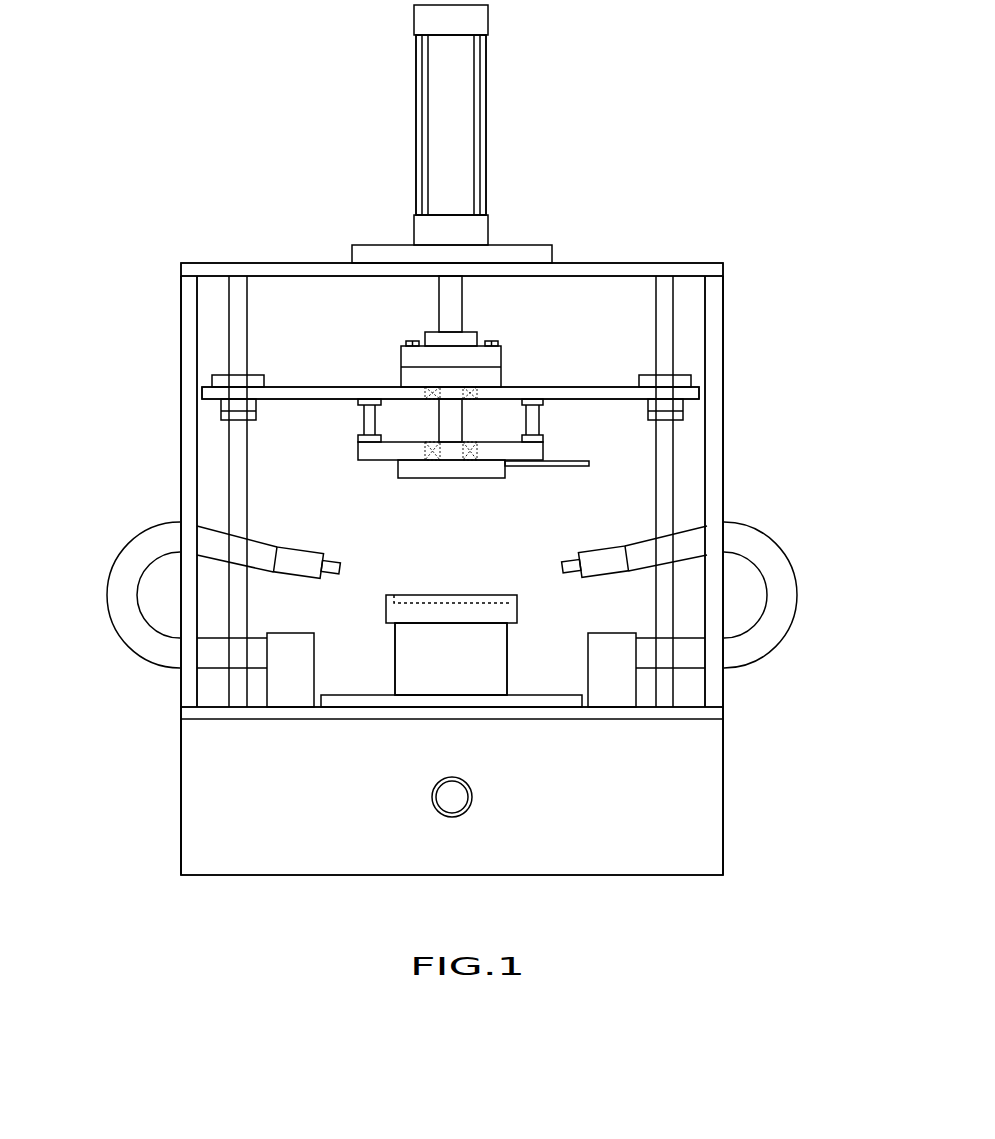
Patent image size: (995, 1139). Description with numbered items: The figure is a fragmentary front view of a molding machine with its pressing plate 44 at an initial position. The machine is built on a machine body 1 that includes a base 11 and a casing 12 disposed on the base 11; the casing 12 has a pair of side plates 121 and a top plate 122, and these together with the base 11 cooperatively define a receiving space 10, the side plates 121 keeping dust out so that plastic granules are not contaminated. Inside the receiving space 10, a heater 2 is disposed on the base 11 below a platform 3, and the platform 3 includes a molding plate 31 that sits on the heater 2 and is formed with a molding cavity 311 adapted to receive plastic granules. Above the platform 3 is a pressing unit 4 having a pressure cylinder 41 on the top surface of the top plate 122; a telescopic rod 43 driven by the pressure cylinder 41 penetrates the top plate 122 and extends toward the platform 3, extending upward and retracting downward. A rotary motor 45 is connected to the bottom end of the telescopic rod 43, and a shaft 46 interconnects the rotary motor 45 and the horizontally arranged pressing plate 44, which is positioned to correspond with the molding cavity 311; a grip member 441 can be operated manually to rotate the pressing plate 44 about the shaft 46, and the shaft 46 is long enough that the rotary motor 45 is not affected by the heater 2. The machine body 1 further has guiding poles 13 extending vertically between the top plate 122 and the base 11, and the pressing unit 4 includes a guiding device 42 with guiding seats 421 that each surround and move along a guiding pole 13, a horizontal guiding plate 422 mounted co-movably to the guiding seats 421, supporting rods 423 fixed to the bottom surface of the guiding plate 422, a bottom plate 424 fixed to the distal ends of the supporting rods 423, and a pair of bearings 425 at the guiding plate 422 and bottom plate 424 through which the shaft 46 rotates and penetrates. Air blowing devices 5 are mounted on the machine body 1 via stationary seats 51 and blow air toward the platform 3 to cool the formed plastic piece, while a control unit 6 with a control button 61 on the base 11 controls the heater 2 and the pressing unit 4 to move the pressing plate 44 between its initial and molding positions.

The machine body 1 is at (168, 841).
The receiving space 10 is at (215, 468).
The base 11 is at (220, 785).
The casing 12 is at (181, 512).
The side plates 121 is at (183, 296).
The top plate 122 is at (276, 268).
The guiding poles 13 is at (240, 295).
The heater 2 is at (450, 643).
The platform 3 is at (530, 607).
The molding plate 31 is at (517, 618).
The molding cavity 311 is at (394, 603).
The pressing unit 4 is at (502, 137).
The pressure cylinder 41 is at (463, 82).
The guiding device 42 is at (575, 396).
The guiding seats 421 is at (212, 382).
The guiding plate 422 is at (652, 393).
The supporting rods 423 is at (365, 423).
The bottom plate 424 is at (363, 452).
The bearings 425 is at (425, 392).
The telescopic rod 43 is at (457, 305).
The pressing plate 44 is at (460, 470).
The grip member 441 is at (557, 462).
The rotary motor 45 is at (432, 378).
The shaft 46 is at (457, 415).
The air blowing devices 5 is at (300, 568).
The stationary seats 51 is at (611, 697).
The control unit 6 is at (488, 809).
The control button 61 is at (452, 797).